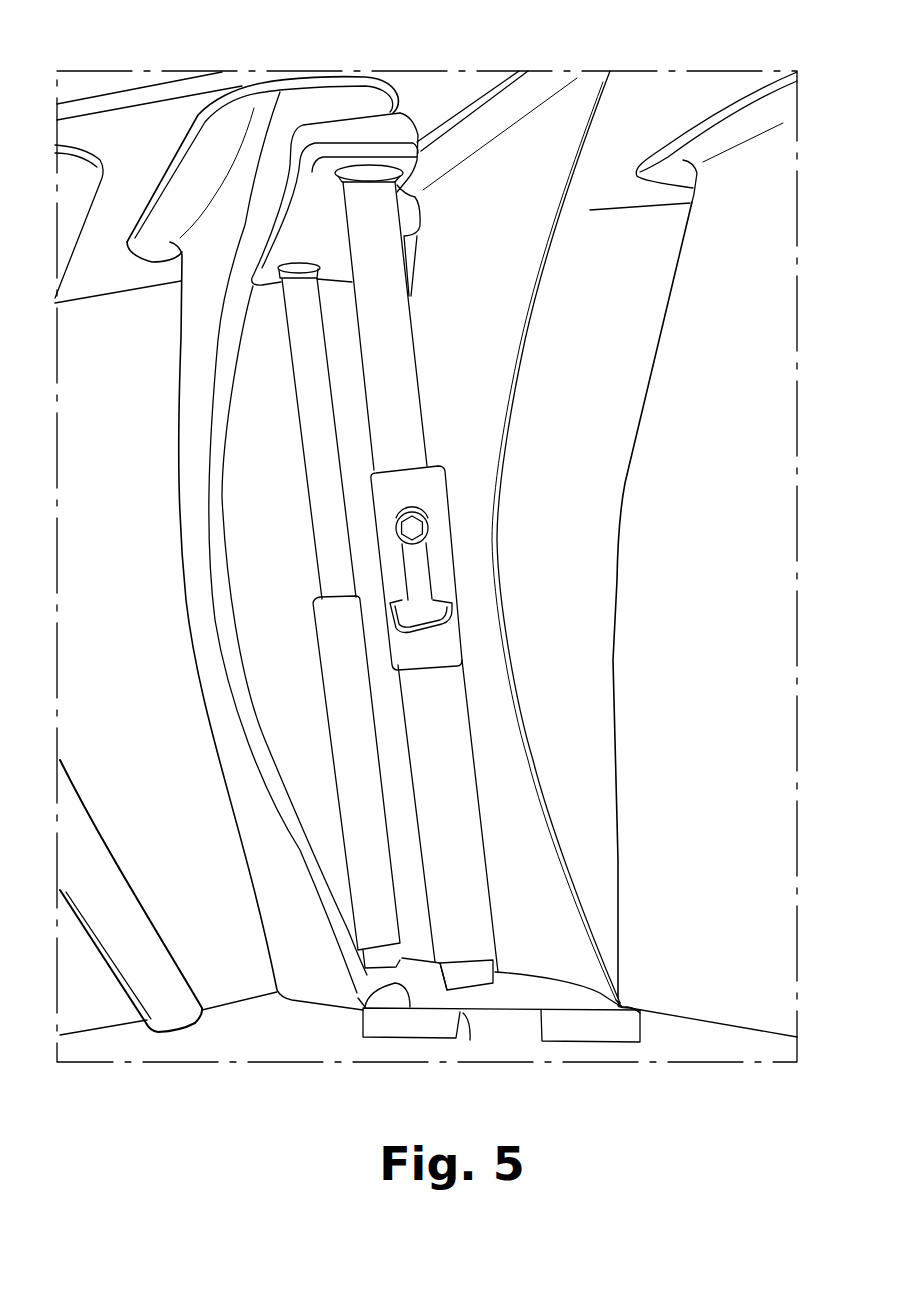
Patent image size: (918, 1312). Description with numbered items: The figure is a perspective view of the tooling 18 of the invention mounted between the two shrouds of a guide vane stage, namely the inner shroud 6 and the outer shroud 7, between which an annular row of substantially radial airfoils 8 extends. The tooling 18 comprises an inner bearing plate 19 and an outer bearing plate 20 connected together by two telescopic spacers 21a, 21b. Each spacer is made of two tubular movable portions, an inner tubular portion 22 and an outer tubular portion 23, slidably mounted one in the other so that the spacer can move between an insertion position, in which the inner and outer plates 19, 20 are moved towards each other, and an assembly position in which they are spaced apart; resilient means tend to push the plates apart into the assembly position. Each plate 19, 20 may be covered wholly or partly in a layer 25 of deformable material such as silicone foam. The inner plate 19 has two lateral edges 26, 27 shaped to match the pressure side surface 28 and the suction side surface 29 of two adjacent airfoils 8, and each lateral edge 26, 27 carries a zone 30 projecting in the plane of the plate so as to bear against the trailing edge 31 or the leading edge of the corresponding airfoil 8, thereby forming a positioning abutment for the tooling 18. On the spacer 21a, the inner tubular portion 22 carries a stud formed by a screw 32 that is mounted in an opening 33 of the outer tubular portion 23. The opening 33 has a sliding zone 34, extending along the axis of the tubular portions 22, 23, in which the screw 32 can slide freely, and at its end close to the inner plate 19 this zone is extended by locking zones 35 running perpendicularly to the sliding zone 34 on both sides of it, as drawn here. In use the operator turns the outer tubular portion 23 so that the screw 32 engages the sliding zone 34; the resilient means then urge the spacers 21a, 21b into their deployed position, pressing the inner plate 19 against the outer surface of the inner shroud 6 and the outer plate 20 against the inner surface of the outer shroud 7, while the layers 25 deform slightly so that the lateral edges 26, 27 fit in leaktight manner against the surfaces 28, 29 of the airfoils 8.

The inner shroud 6 is at (238, 1022).
The outer shroud 7 is at (118, 126).
The airfoil 8 is at (155, 423).
The tooling 18 is at (283, 498).
The inner bearing plate 19 is at (528, 987).
The outer bearing plate 20 is at (323, 180).
The telescopic spacer 21a is at (470, 708).
The telescopic spacer 21b is at (307, 667).
The inner tubular portion 22 is at (400, 363).
The outer tubular portion 23 is at (430, 700).
The layer of deformable material 25 is at (354, 128).
The lateral edge 26 is at (400, 984).
The lateral edge 27 is at (583, 983).
The pressure side surface 28 is at (280, 820).
The suction side surface 29 is at (523, 853).
The projecting zone 30 is at (382, 990).
The trailing edge 31 is at (290, 873).
The screw 32 is at (417, 532).
The opening 33 is at (423, 573).
The sliding zone 34 is at (402, 548).
The locking zone 35 is at (460, 627).